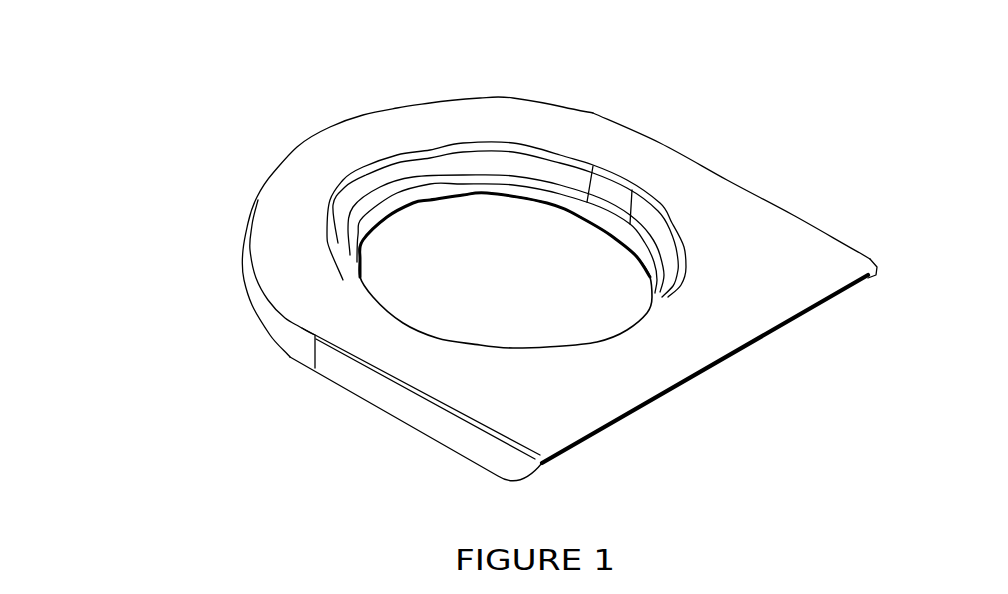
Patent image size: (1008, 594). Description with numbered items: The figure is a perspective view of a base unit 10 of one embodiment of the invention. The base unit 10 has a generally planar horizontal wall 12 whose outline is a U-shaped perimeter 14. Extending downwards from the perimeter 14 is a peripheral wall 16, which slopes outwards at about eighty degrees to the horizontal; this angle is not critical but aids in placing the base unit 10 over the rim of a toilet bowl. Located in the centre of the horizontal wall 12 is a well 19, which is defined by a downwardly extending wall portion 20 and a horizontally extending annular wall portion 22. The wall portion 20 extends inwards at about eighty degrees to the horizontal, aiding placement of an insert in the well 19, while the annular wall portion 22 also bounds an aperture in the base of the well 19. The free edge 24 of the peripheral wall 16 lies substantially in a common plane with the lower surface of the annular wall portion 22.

The base unit 10 is at (273, 150).
The horizontal wall 12 is at (693, 188).
The U-shaped perimeter 14 is at (395, 380).
The peripheral wall 16 is at (453, 428).
The well 19 is at (523, 223).
The downwardly extending wall portion 20 is at (687, 270).
The annular wall portion 22 is at (665, 303).
The free edge 24 is at (290, 357).